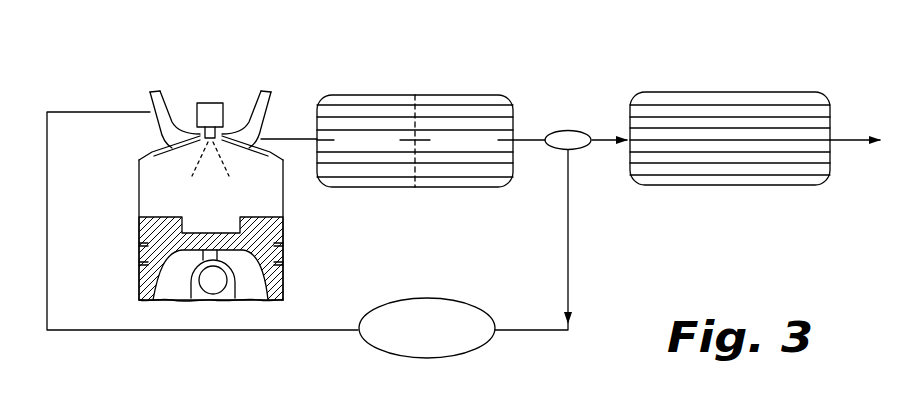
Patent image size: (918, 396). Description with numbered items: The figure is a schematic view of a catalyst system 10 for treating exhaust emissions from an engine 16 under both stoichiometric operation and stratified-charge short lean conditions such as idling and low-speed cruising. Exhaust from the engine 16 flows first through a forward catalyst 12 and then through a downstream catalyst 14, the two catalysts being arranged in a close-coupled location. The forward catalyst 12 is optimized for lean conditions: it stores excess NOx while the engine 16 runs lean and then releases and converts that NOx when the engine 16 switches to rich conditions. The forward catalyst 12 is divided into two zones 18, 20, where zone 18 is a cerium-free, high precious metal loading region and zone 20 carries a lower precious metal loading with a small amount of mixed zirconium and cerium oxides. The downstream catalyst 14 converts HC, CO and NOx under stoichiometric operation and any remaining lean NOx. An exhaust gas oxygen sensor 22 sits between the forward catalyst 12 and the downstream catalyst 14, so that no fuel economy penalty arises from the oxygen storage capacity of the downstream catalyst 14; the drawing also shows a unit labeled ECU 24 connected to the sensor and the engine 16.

The catalyst system 10 is at (635, 63).
The forward catalyst 12 is at (413, 138).
The downstream catalyst 14 is at (700, 185).
The engine 16 is at (139, 288).
The zone 18 is at (370, 95).
The zone 20 is at (457, 95).
The exhaust gas oxygen sensor 22 is at (573, 152).
The electronic control unit (ECU) 24 is at (422, 298).